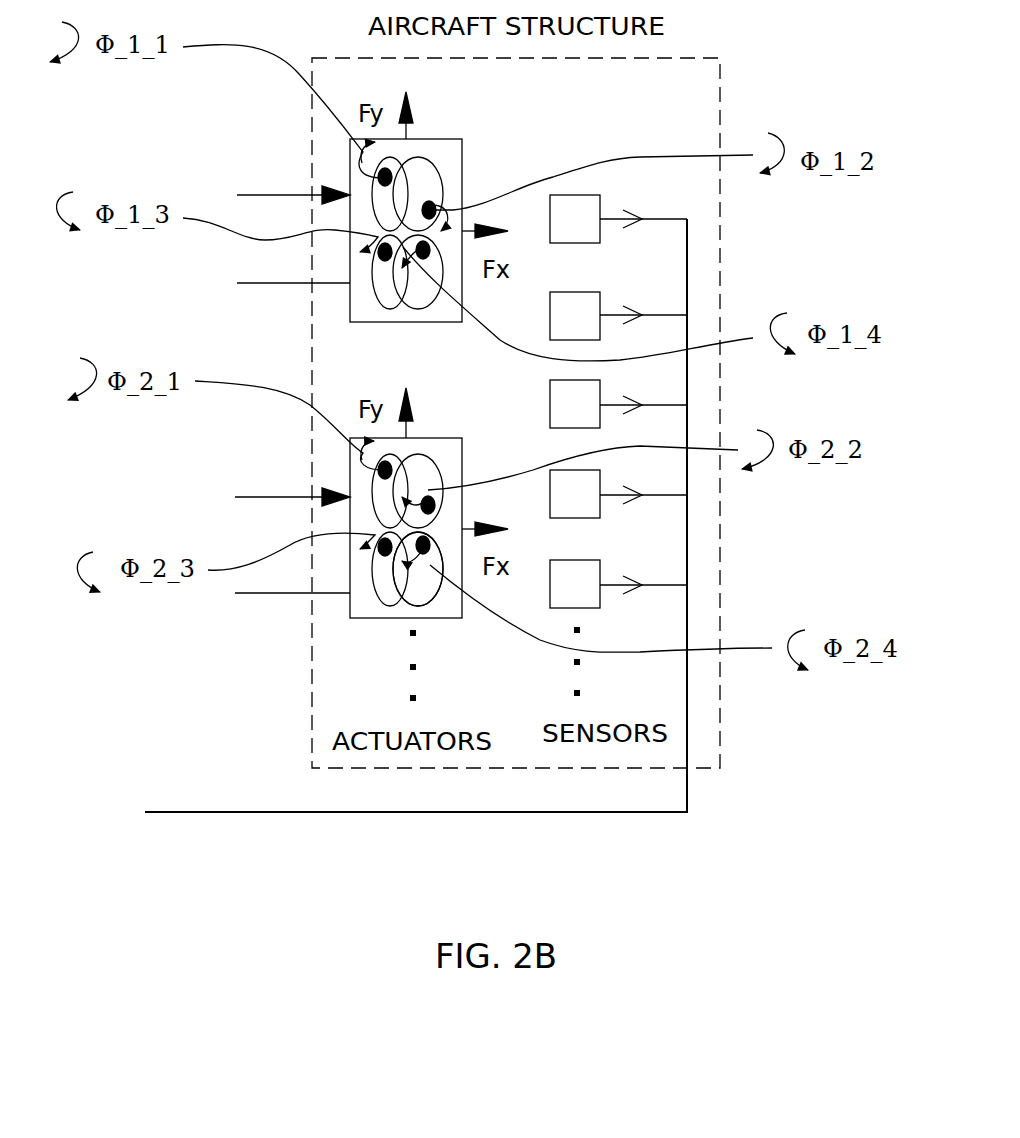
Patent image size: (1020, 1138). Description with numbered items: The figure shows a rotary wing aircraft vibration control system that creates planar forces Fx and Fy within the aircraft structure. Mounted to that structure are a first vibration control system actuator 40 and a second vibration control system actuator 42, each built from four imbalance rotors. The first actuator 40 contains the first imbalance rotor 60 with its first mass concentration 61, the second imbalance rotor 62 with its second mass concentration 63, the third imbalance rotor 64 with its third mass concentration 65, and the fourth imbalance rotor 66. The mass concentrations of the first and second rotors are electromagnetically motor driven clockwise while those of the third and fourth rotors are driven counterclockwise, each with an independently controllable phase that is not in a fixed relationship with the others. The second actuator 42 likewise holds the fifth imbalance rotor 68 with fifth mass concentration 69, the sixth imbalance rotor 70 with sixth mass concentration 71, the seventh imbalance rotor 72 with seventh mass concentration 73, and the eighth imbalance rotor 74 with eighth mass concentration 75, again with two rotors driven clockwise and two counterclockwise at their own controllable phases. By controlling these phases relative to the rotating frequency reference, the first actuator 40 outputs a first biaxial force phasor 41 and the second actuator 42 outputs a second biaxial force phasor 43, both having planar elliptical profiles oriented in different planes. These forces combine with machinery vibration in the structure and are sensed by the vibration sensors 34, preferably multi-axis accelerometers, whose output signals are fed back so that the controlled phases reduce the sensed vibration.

The vibration sensors 34 is at (618, 401).
The first vibration control system actuator 40 is at (469, 115).
The first biaxial force phasor 41 is at (420, 322).
The second vibration control system actuator 42 is at (440, 630).
The second biaxial force phasor 43 is at (433, 593).
The first imbalance rotor 60 is at (372, 192).
The first mass concentration 61 is at (383, 177).
The second imbalance rotor 62 is at (430, 203).
The second mass concentration 63 is at (441, 178).
The third imbalance rotor 64 is at (372, 265).
The third mass concentration 65 is at (385, 255).
The fourth imbalance rotor 66 is at (425, 248).
The fifth imbalance rotor 68 is at (372, 505).
The fifth mass concentration 69 is at (383, 472).
The sixth imbalance rotor 70 is at (430, 492).
The sixth mass concentration 71 is at (437, 503).
The seventh imbalance rotor 72 is at (385, 603).
The seventh mass concentration 73 is at (385, 552).
The eighth imbalance rotor 74 is at (433, 597).
The eighth mass concentration 75 is at (433, 540).